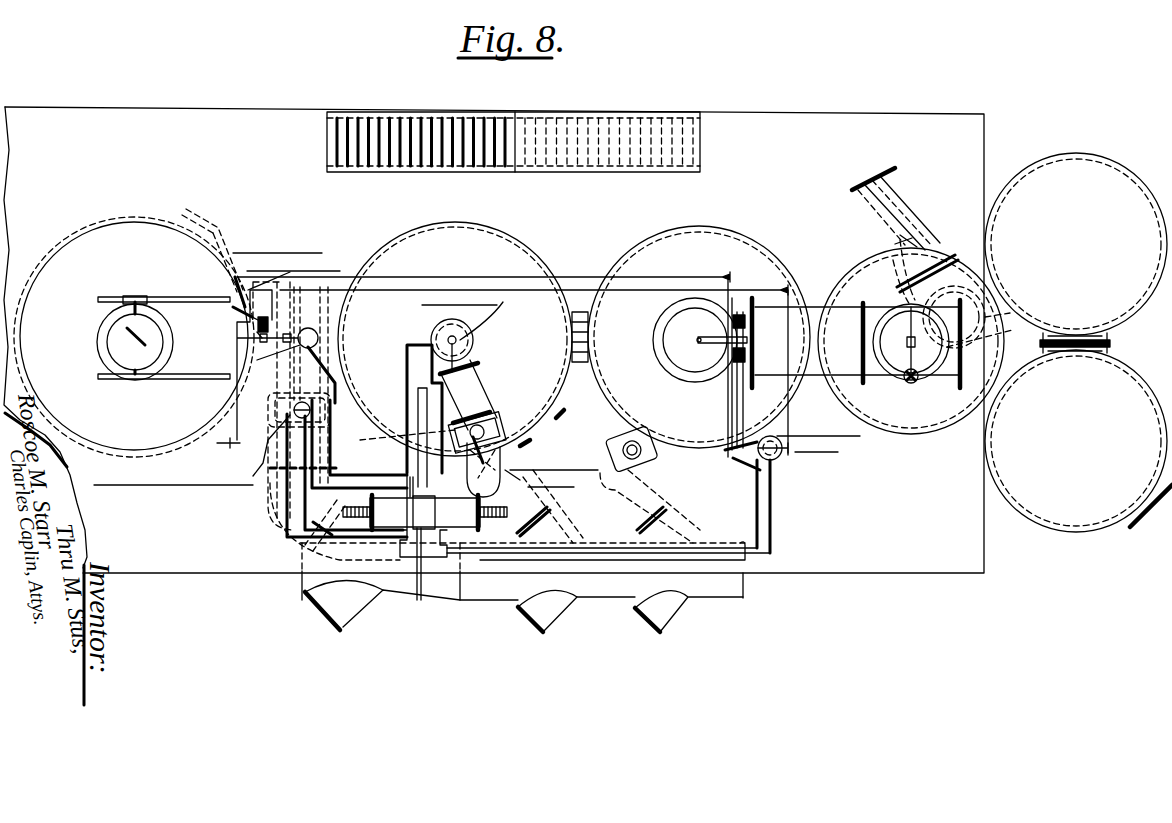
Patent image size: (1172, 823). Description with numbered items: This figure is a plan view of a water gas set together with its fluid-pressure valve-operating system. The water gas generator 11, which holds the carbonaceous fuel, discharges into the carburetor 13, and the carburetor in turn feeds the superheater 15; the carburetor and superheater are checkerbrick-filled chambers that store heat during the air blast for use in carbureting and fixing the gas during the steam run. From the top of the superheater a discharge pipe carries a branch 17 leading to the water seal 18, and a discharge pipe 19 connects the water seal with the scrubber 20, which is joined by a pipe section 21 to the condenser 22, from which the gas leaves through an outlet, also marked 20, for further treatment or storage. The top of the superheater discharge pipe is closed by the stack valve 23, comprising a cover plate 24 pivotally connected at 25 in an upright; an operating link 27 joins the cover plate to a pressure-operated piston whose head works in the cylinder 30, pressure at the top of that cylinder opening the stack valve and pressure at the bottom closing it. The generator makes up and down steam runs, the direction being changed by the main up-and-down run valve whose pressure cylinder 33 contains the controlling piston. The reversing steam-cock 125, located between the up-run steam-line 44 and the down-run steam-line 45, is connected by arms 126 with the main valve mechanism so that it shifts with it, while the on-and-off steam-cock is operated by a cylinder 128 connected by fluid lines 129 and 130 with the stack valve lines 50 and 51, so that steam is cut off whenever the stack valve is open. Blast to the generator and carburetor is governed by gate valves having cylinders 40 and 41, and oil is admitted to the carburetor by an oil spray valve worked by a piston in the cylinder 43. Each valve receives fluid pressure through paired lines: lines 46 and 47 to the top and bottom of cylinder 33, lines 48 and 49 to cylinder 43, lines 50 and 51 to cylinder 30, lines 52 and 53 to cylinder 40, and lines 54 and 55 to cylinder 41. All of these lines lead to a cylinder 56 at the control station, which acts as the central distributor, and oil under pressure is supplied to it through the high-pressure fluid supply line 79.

The water gas generator 11 is at (134, 337).
The carburetor 13 is at (463, 339).
The superheater 15 is at (699, 337).
The branch 17 is at (857, 344).
The water seal 18 is at (911, 341).
The discharge pipe 19 is at (1002, 316).
The scrubber 20 is at (1132, 547).
The pipe section 21 is at (1110, 342).
The condenser 22 is at (1076, 441).
The stack valve 23 is at (713, 345).
The cover plate 24 is at (695, 340).
The pivotal connection 25 is at (752, 341).
The operating link 27 is at (737, 455).
The cylinder 30 is at (812, 448).
The pressure cylinder 33 is at (318, 337).
The cylinder 40 is at (294, 410).
The cylinder 41 is at (495, 425).
The cylinder 43 is at (463, 342).
The up-run steam-line 44 is at (284, 458).
The down-run steam-line 45 is at (207, 224).
The fluid pressure line 46 is at (330, 432).
The fluid pressure line 47 is at (366, 462).
The fluid pressure line 48 is at (418, 345).
The fluid pressure line 49 is at (470, 392).
The fluid pressure line 50 is at (757, 506).
The fluid pressure line 51 is at (773, 532).
The fluid pressure line 52 is at (380, 489).
The fluid pressure line 53 is at (287, 493).
The fluid pressure line 54 is at (473, 467).
The fluid pressure line 55 is at (608, 538).
The cylinder 56 is at (425, 536).
The high-pressure fluid supply line 79 is at (420, 396).
The steam-cock 125 is at (257, 332).
The arms 126 is at (257, 360).
The cylinder 128 is at (248, 315).
The fluid line 129 is at (237, 293).
The fluid line 130 is at (395, 292).